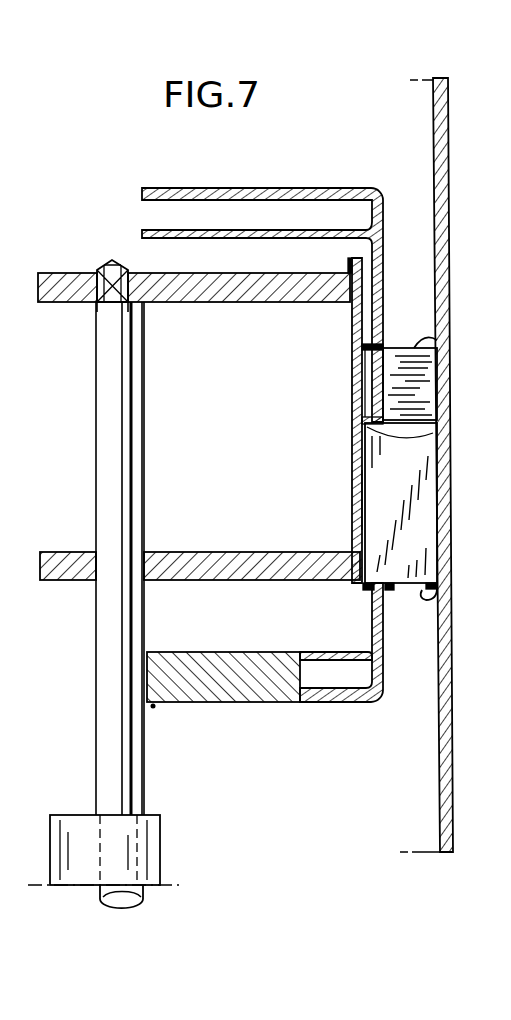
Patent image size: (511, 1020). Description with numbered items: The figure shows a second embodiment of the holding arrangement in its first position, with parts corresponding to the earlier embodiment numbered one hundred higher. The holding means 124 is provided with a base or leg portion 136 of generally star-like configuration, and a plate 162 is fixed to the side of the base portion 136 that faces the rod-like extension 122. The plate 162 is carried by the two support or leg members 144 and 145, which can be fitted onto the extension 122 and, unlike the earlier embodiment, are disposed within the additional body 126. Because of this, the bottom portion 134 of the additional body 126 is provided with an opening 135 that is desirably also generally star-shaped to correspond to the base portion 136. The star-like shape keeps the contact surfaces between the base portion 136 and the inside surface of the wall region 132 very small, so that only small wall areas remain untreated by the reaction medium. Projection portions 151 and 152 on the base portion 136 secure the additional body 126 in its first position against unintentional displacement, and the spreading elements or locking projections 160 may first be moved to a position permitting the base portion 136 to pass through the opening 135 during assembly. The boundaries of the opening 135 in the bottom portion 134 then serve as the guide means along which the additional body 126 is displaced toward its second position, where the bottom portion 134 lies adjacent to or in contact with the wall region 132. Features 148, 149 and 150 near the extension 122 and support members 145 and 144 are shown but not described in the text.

The rod-like extension 122 is at (106, 437).
The holding means 124 is at (342, 436).
The additional body 126 is at (312, 188).
The wall region 132 is at (449, 252).
The bottom portion 134 is at (388, 648).
The opening 135 is at (430, 432).
The base portion 136 is at (400, 342).
The support or leg member 144 is at (222, 568).
The support or leg member 145 is at (277, 292).
The lower plate hole 148 is at (98, 564).
The upper plate hole 149 is at (106, 307).
The nut 150 is at (113, 261).
The projection portion 151 is at (370, 591).
The projection portion 152 is at (390, 594).
The spreading element or locking projection 160 is at (433, 335).
The plate 162 is at (352, 500).